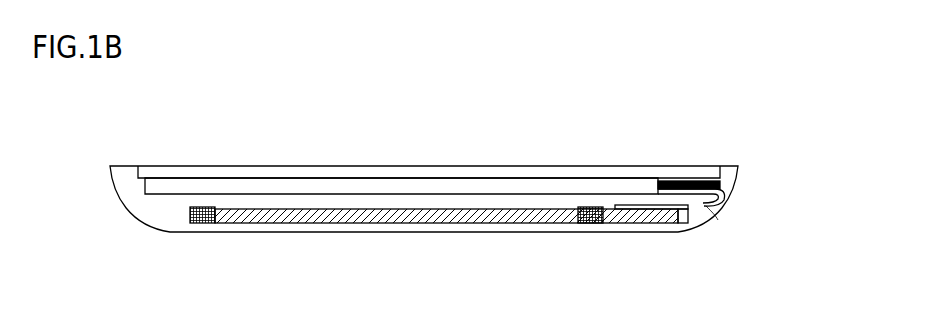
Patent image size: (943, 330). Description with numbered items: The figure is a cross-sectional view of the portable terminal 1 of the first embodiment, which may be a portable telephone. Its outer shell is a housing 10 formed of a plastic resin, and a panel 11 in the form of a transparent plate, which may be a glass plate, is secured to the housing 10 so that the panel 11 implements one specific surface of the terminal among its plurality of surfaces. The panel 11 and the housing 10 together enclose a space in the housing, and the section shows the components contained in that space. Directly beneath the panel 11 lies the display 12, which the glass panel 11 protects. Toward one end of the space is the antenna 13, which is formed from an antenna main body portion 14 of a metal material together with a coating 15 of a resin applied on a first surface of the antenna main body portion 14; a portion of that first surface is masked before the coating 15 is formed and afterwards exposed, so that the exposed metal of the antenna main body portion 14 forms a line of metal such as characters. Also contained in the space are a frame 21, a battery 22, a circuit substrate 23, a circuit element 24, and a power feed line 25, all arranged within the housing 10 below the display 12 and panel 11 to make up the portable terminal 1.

The portable terminal 1 is at (764, 122).
The housing 10 is at (178, 236).
The panel 11 is at (462, 172).
The display 12 is at (525, 185).
The antenna 13 is at (790, 180).
The antenna main body portion 14 is at (723, 193).
The coating 15 is at (721, 185).
The frame 21 is at (208, 225).
The battery 22 is at (423, 215).
The circuit substrate 23 is at (677, 222).
The circuit element 24 is at (642, 221).
The power feed line 25 is at (705, 208).